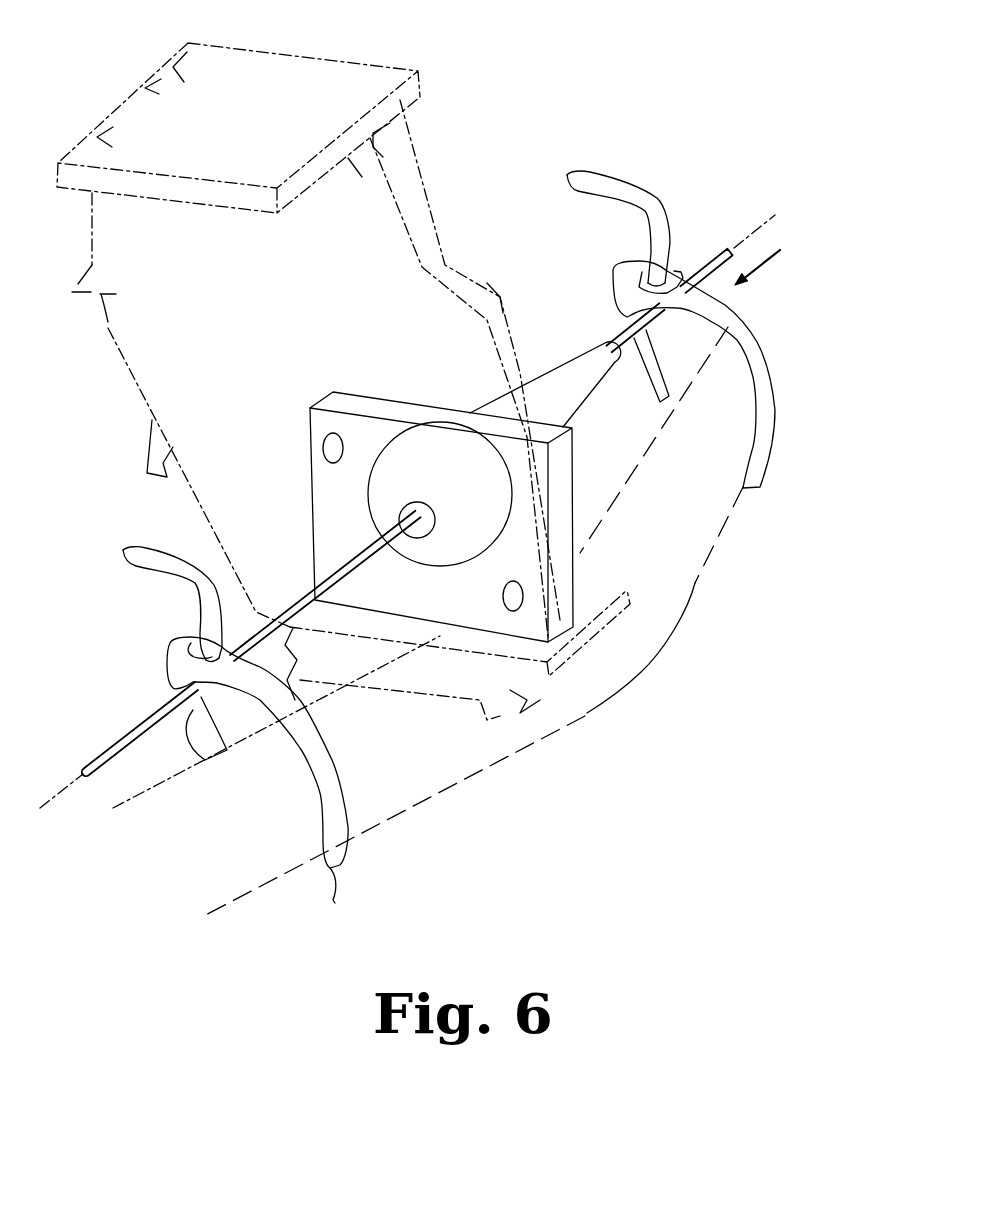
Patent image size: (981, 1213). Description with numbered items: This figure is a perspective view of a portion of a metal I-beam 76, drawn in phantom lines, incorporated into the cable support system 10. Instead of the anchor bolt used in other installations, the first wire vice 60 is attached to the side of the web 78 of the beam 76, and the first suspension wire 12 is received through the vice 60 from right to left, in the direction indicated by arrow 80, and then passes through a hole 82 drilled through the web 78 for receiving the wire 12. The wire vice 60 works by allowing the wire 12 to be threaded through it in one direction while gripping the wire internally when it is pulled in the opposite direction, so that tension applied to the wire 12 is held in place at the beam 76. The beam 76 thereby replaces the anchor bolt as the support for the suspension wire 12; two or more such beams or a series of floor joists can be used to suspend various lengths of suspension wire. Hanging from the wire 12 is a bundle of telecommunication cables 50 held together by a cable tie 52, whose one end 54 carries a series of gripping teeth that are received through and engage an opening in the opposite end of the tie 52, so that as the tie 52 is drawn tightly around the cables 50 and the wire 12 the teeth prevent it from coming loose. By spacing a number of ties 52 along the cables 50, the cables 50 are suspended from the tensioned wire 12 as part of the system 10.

The system 10 is at (810, 123).
The first suspension wire 12 is at (712, 247).
The telecommunication cables 50 is at (687, 550).
The cable tie 52 is at (775, 410).
The one end of the cable tie 54 is at (597, 175).
The first wire vice 60 is at (586, 350).
The I-beam 76 is at (368, 208).
The web 78 is at (347, 313).
The arrow 80 is at (758, 264).
The hole 82 is at (440, 408).